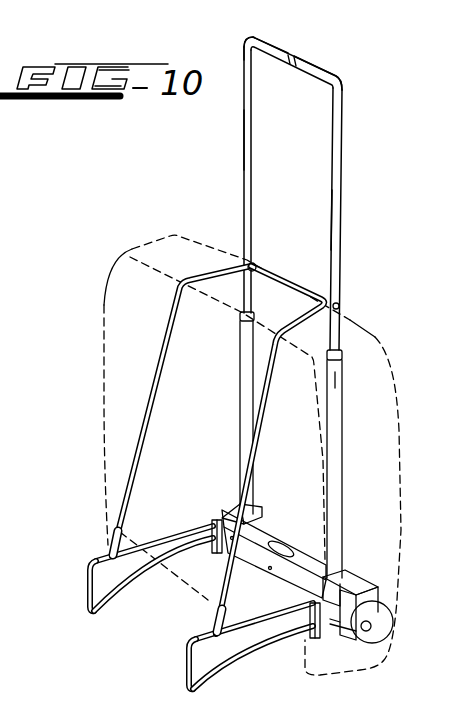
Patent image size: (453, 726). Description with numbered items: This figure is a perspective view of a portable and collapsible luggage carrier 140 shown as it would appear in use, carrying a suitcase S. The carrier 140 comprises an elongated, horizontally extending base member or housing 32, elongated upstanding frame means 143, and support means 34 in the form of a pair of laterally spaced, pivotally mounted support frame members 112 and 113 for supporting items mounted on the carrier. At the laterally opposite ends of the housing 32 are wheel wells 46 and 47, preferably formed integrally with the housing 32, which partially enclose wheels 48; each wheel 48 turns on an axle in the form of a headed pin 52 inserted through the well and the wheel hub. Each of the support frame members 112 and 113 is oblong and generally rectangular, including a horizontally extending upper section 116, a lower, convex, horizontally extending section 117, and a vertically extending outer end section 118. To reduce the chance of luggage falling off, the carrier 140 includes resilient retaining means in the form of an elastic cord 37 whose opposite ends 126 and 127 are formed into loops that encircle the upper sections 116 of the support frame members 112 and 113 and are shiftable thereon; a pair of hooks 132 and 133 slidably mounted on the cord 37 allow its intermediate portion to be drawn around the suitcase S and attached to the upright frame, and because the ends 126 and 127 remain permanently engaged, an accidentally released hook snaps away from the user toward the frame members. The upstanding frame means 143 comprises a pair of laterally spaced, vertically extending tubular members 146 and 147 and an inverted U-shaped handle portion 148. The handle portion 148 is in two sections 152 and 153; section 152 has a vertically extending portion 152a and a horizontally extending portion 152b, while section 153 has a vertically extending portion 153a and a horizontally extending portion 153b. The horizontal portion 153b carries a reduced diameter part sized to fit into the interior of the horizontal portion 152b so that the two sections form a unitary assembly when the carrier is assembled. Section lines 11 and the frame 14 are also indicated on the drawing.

The section line 11 is at (224, 478).
The support frame 14 is at (304, 316).
The housing 32 is at (303, 528).
The support means 34 is at (245, 663).
The elastic cord 37 is at (147, 394).
The wheel well 46 is at (254, 510).
The wheel well 47 is at (372, 592).
The wheel 48 is at (302, 532).
The headed pin 52 is at (380, 617).
The support frame member 112 is at (191, 639).
The support frame member 113 is at (89, 556).
The upper section 116 is at (163, 533).
The lower convex section 117 is at (148, 575).
The outer end section 118 is at (87, 591).
The cord end 126 is at (214, 628).
The cord end 127 is at (112, 538).
The hook 132 is at (341, 309).
The hook 133 is at (256, 263).
The luggage carrier 140 is at (358, 191).
The upstanding frame means 143 is at (358, 288).
The tubular member 146 is at (338, 497).
The tubular member 147 is at (240, 412).
The handle portion 148 is at (336, 69).
The handle section 152 is at (347, 156).
The vertically extending portion 152a is at (338, 225).
The horizontally extending portion 152b is at (306, 66).
The handle section 153 is at (242, 214).
The vertically extending portion 153a is at (243, 133).
The horizontally extending portion 153b is at (272, 50).
The suitcase S is at (171, 231).